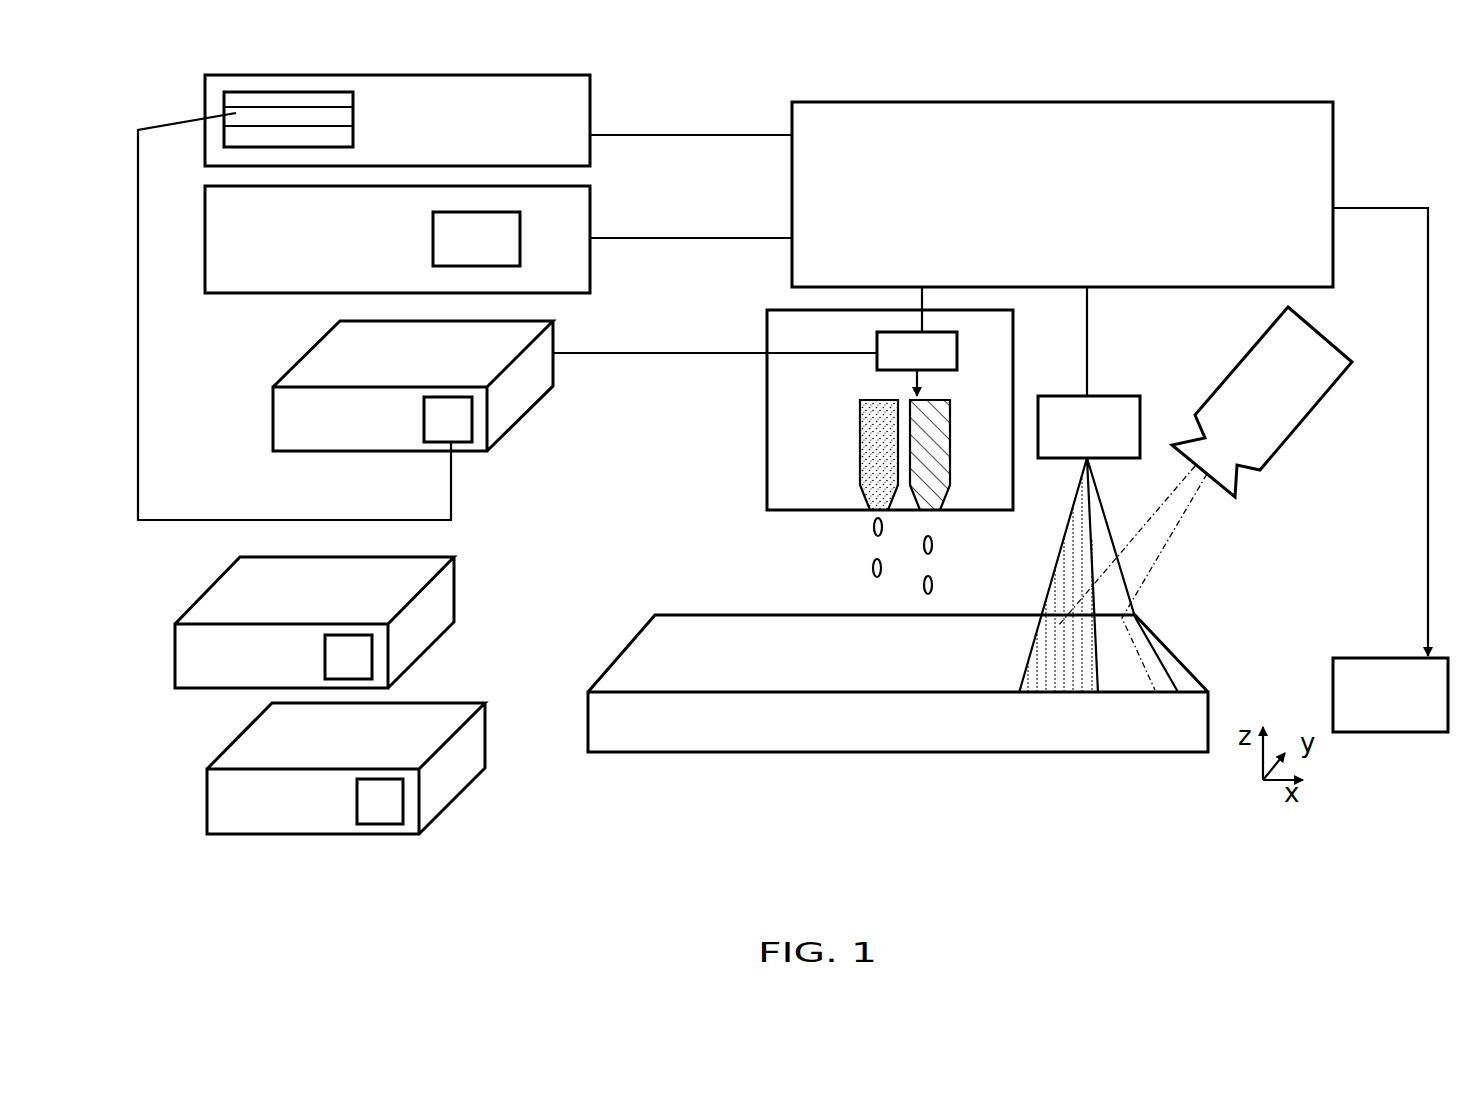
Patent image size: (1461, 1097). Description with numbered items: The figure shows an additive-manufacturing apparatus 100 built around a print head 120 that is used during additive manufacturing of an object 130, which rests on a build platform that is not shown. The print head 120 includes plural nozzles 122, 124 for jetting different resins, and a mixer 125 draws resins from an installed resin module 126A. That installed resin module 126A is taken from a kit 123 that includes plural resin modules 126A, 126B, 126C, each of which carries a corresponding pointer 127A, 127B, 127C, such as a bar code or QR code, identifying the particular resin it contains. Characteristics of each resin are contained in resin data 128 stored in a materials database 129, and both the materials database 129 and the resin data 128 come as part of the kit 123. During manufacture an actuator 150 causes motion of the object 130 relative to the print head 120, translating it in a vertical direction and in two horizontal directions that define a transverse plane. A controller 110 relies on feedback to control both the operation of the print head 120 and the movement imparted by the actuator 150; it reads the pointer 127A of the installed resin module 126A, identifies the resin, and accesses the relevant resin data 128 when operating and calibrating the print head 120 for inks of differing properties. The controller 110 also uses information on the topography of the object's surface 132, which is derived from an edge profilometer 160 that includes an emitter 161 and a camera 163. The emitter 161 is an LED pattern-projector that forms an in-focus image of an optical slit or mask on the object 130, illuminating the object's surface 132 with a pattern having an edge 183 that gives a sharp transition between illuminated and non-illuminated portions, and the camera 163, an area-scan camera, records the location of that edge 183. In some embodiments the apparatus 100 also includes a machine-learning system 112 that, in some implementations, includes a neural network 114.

The additive-manufacturing apparatus 100 is at (1457, 66).
The controller 110 is at (1087, 206).
The machine-learning system 112 is at (268, 227).
The neural network 114 is at (501, 252).
The print head 120 is at (767, 427).
The nozzle 122 is at (860, 430).
The kit 123 is at (162, 599).
The nozzle 124 is at (950, 430).
The mixer 125 is at (942, 364).
The installed resin module 126A is at (380, 430).
The resin module 126B is at (281, 669).
The resin module 126C is at (313, 814).
The pointer 127A is at (462, 442).
The pointer 127B is at (425, 657).
The pointer 127C is at (453, 806).
The resin data 128 is at (353, 137).
The materials database 129 is at (569, 147).
The object 130 is at (659, 736).
The object's surface 132 is at (688, 625).
The actuator 150 is at (1415, 709).
The edge profilometer 160 is at (1322, 427).
The emitter 161 is at (1114, 441).
The camera 163 is at (1288, 412).
The edge 183 is at (1098, 675).